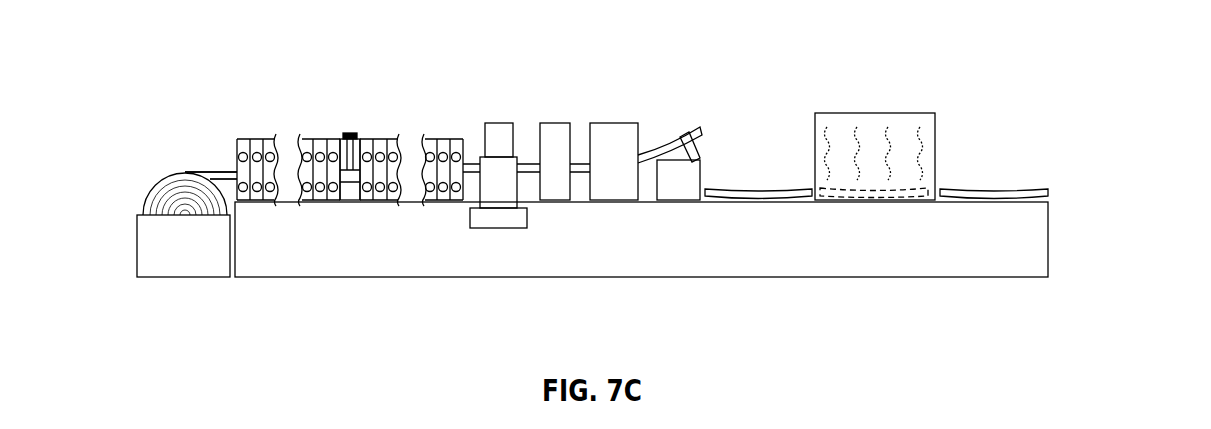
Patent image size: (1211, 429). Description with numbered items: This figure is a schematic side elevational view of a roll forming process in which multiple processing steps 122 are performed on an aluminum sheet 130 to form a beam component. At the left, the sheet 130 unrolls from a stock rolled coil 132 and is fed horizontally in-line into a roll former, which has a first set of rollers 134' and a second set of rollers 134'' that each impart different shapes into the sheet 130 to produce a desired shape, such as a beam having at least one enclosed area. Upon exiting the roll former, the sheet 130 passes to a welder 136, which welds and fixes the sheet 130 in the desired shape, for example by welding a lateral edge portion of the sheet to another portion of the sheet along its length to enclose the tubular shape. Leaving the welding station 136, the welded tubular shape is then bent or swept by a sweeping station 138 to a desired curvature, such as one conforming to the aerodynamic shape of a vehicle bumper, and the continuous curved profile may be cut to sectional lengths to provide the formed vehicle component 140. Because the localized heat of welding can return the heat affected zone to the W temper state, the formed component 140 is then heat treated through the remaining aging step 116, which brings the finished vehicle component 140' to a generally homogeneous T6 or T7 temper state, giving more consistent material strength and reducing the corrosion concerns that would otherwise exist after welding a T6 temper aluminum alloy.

The processing steps 122 is at (717, 72).
The remaining aging step 116 is at (943, 73).
The sheet 130 is at (220, 167).
The coil 132 is at (143, 181).
The first set of rollers 134' is at (289, 140).
The second set of rollers 134'' is at (412, 140).
The welder 136 is at (525, 118).
The sweeping station 138 is at (640, 118).
The formed vehicle component 140 is at (758, 146).
The vehicle component 140' is at (994, 148).